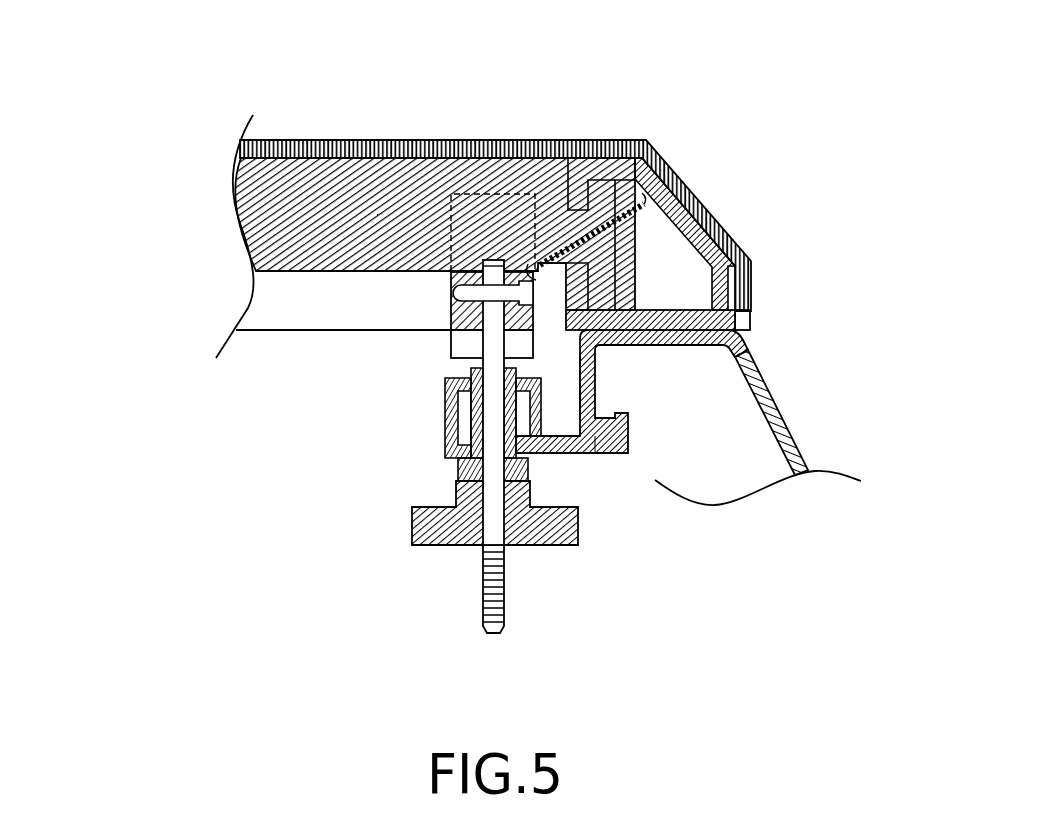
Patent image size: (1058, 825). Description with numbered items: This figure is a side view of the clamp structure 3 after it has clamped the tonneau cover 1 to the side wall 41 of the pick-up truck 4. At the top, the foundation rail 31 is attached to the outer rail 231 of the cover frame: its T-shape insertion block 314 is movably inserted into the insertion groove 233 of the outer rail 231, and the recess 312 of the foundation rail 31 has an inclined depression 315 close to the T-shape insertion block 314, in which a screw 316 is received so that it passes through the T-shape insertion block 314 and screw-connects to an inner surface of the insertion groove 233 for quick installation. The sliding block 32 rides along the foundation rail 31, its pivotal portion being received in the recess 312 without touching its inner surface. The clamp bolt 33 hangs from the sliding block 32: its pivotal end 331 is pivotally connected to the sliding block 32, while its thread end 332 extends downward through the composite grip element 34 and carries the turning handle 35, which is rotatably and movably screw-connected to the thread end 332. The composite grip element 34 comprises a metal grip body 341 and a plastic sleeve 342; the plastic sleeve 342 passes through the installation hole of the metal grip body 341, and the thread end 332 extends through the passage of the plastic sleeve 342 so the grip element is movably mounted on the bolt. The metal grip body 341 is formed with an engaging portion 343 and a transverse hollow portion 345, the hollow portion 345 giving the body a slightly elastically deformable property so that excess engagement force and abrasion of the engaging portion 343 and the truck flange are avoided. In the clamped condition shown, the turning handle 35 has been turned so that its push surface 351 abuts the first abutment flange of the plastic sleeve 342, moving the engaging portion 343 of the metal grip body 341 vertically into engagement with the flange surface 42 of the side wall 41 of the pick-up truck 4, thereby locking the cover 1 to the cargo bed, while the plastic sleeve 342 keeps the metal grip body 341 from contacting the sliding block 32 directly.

The panel 1 is at (388, 132).
The clamp structure 3 is at (232, 497).
The foundation rail 31 is at (243, 328).
The recess 312 is at (253, 283).
The T-shape insertion block 314 is at (590, 178).
The inclined depression 315 is at (518, 185).
The screw 316 is at (660, 153).
The sliding block 32 is at (442, 310).
The clamp bolt 33 is at (376, 465).
The pivotal end 331 is at (447, 332).
The thread end 332 is at (553, 608).
The composite grip element 34 is at (423, 449).
The metal grip body 341 is at (437, 430).
The plastic sleeve 342 is at (448, 462).
The engaging portion 343 is at (613, 403).
The hollow portion 345 is at (515, 410).
The turning handle 35 is at (409, 574).
The push surface 351 is at (445, 475).
The pick-up truck 4 is at (694, 320).
The side wall 41 is at (760, 348).
The flange surface 42 is at (587, 360).
The outer rail 231 is at (548, 172).
The insertion groove 233 is at (615, 178).